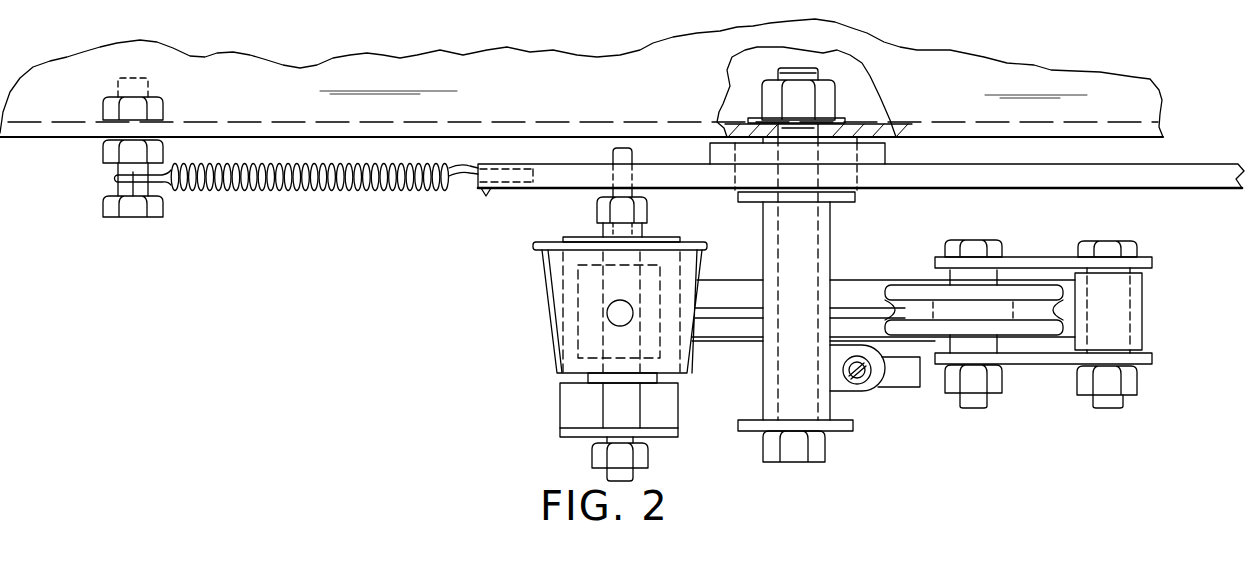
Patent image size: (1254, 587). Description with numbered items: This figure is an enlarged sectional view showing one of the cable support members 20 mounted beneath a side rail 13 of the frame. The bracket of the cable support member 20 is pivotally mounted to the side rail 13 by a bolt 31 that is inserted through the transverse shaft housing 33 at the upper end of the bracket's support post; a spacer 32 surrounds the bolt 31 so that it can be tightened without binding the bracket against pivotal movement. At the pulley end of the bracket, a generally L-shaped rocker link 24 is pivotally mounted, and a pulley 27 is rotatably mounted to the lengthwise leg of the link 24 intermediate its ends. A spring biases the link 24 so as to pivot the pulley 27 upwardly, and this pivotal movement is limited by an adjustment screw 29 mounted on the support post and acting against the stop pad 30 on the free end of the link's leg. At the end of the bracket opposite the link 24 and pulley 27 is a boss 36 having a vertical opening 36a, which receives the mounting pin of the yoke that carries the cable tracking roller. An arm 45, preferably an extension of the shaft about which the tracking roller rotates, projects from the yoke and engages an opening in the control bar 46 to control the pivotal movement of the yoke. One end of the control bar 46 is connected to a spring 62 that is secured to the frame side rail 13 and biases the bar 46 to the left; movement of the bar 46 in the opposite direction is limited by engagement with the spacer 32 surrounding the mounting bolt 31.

The side rail 13 is at (1163, 130).
The cable support member 20 is at (991, 348).
The rocker link 24 is at (1028, 258).
The pulley 27 is at (913, 290).
The adjustment screw 29 is at (852, 382).
The stop pad 30 is at (913, 389).
The bolt 31 is at (822, 72).
The spacer 32 is at (822, 237).
The transverse shaft housing 33 is at (763, 372).
The boss 36 is at (571, 359).
The vertical opening 36a is at (612, 328).
The arm 45 is at (626, 147).
The control bar 46 is at (1160, 190).
The spring 62 is at (268, 190).